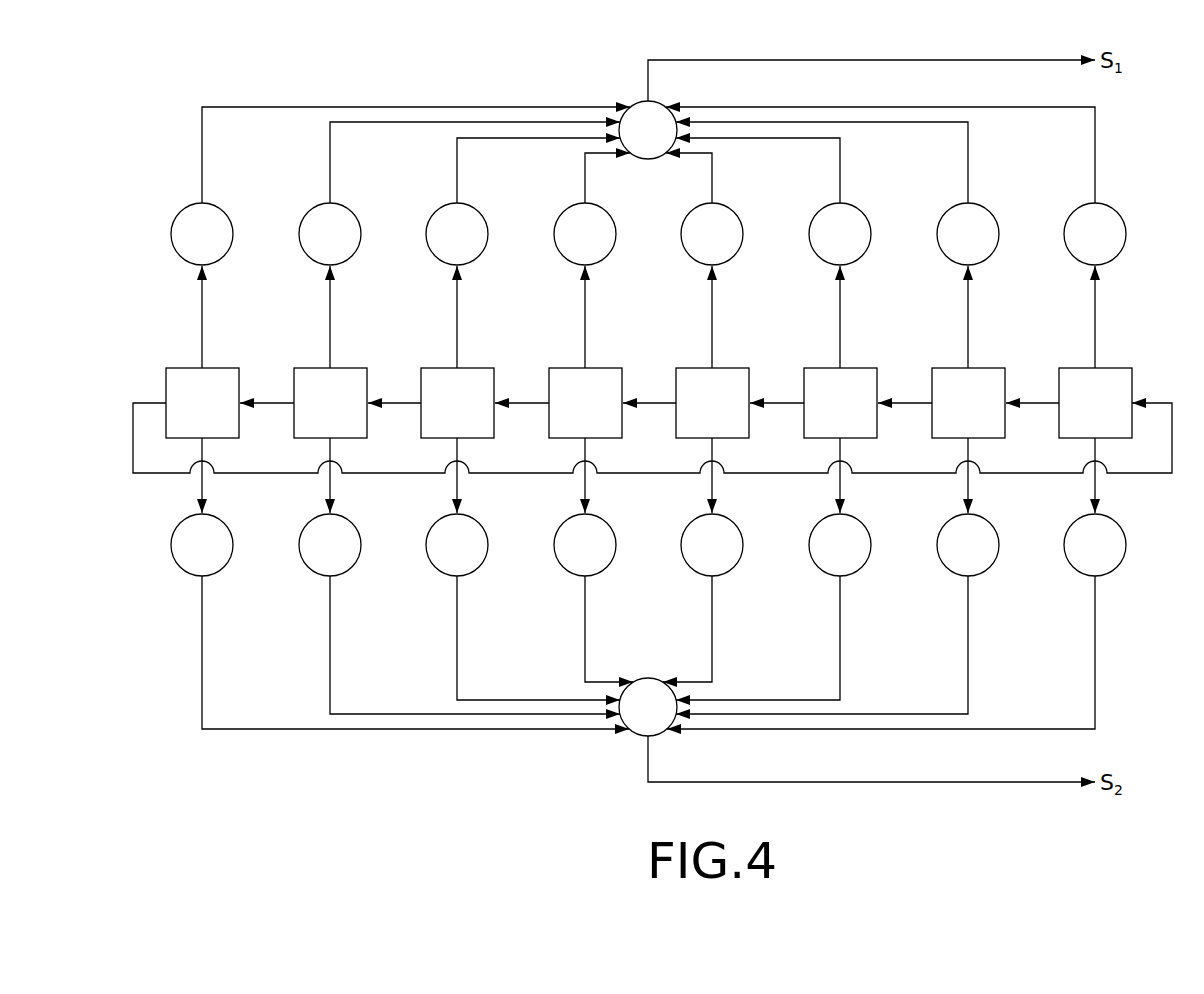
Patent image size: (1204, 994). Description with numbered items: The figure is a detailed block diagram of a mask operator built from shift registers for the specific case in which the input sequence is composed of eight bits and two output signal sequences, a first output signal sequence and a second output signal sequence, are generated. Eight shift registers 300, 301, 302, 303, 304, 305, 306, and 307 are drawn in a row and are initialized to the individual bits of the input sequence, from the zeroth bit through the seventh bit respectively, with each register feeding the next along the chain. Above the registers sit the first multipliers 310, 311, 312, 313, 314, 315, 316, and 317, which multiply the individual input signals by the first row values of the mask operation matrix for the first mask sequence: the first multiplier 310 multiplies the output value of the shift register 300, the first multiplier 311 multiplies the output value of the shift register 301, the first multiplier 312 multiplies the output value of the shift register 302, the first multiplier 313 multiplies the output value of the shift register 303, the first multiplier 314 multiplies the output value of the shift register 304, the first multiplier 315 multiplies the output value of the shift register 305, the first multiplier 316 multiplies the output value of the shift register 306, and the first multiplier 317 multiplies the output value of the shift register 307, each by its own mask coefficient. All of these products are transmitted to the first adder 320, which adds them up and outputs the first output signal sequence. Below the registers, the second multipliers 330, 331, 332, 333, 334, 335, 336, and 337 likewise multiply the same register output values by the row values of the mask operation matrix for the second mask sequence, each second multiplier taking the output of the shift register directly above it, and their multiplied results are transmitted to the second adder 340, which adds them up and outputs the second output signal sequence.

The shift register 300 is at (229, 368).
The shift register 301 is at (357, 368).
The shift register 302 is at (484, 368).
The shift register 303 is at (612, 368).
The shift register 304 is at (739, 368).
The shift register 305 is at (867, 368).
The shift register 306 is at (995, 368).
The shift register 307 is at (1122, 368).
The first multiplier 310 is at (190, 266).
The first multiplier 311 is at (318, 266).
The first multiplier 312 is at (445, 266).
The first multiplier 313 is at (573, 266).
The first multiplier 314 is at (700, 266).
The first multiplier 315 is at (828, 266).
The first multiplier 316 is at (956, 266).
The first multiplier 317 is at (1083, 266).
The first adder 320 is at (648, 160).
The second multiplier 330 is at (190, 575).
The second multiplier 331 is at (318, 575).
The second multiplier 332 is at (445, 575).
The second multiplier 333 is at (573, 575).
The second multiplier 334 is at (700, 575).
The second multiplier 335 is at (828, 575).
The second multiplier 336 is at (956, 575).
The second multiplier 337 is at (1083, 575).
The second adder 340 is at (648, 678).